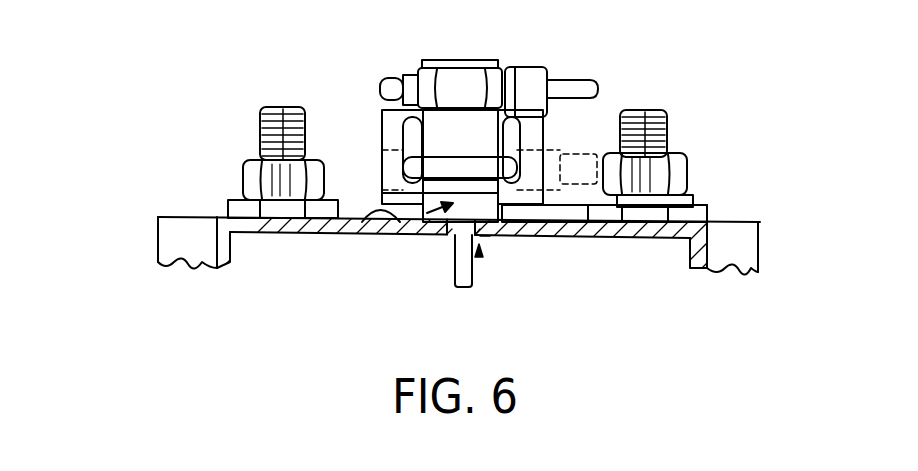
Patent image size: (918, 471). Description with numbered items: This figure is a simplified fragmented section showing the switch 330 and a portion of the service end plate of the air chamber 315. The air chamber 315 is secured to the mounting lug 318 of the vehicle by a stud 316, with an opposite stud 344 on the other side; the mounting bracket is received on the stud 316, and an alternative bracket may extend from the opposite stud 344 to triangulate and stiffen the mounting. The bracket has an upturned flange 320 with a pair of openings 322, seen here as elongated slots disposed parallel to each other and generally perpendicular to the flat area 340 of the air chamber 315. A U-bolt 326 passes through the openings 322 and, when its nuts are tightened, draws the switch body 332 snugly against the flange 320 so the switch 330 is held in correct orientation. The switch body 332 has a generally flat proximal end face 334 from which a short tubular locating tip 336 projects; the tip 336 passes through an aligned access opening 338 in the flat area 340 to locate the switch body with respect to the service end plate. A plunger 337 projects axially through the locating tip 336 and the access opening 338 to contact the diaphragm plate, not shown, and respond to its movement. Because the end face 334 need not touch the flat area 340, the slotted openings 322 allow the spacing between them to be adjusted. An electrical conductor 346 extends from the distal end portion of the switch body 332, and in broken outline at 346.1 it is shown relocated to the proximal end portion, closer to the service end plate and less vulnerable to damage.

The air chamber 315 is at (672, 240).
The stud 316 is at (667, 125).
The mounting lug 318 is at (708, 212).
The upturned flange 320 is at (382, 128).
The openings 322 is at (382, 111).
The U-bolt 326 is at (457, 162).
The switch 330 is at (355, 255).
The switch body 332 is at (412, 223).
The proximal end face 334 is at (485, 238).
The tubular locating tip 336 is at (455, 224).
The plunger 337 is at (463, 275).
The access opening 338 is at (479, 254).
The flat area 340 is at (362, 222).
The opposite stud 344 is at (258, 125).
The electrical conductor 346 is at (584, 88).
The electrical conductor (relocated) 346.1 is at (571, 167).